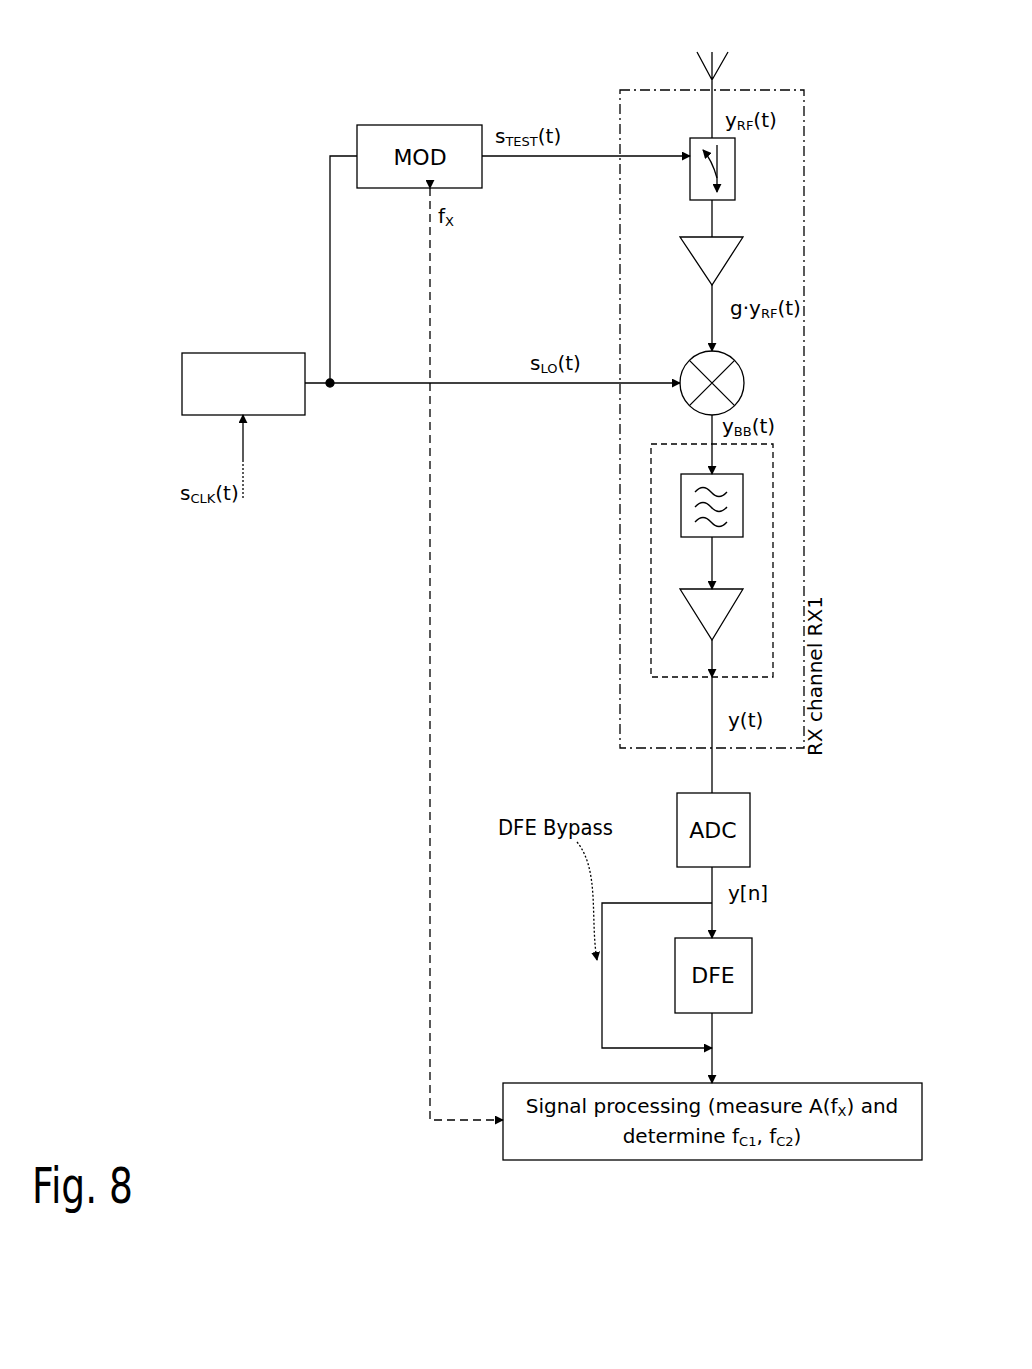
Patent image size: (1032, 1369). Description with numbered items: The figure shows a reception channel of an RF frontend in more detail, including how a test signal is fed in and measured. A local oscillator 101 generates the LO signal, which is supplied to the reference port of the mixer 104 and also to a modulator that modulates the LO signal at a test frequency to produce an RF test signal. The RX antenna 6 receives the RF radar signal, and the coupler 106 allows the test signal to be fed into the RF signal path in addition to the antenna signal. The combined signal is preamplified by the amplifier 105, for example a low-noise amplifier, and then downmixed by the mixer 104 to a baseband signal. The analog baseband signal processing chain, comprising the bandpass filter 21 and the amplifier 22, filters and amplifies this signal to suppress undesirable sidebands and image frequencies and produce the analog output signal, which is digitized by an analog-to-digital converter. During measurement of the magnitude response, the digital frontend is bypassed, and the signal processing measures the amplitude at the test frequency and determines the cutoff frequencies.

The RX antenna 6 is at (722, 70).
The coupler 106 is at (735, 170).
The amplifier 105 is at (735, 255).
The mixer 104 is at (745, 375).
The bandpass filter 21 is at (681, 505).
The amplifier 22 is at (690, 617).
The local oscillator 101 is at (232, 353).